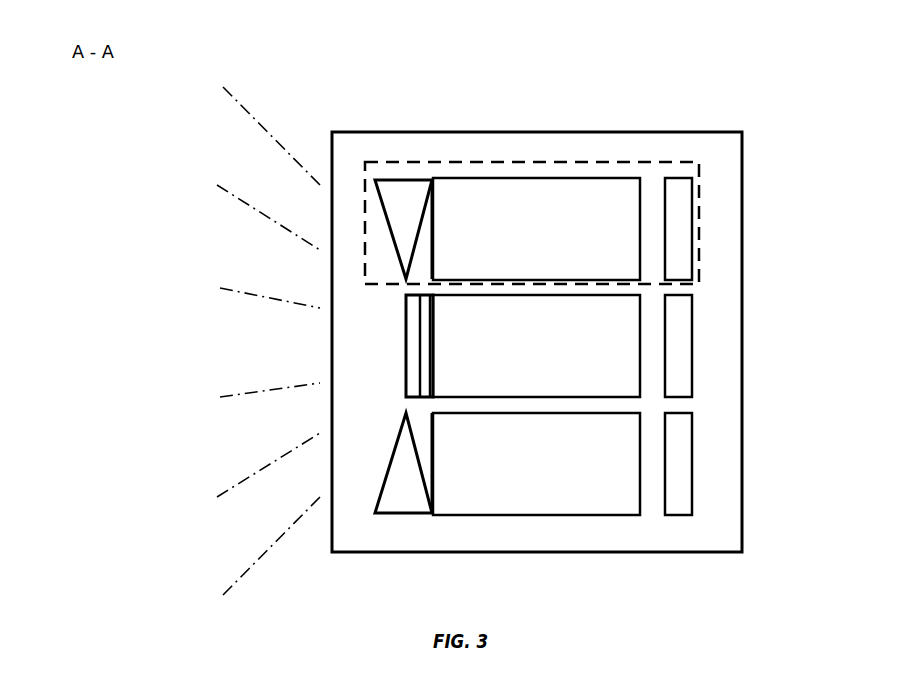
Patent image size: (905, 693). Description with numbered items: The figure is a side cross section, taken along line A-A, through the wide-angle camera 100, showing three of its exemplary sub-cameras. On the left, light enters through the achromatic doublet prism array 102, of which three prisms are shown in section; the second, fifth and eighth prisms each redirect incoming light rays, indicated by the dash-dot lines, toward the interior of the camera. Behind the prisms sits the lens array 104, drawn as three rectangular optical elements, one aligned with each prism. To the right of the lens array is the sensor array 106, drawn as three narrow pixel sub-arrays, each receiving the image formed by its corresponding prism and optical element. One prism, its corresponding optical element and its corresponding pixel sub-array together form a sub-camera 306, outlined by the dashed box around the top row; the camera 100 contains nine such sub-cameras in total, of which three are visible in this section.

The wide-angle camera 100 is at (742, 157).
The achromatic doublet prism array 102 is at (390, 104).
The lens array 104 is at (536, 279).
The sensor array 106 is at (731, 279).
The sub-camera 306 is at (699, 217).